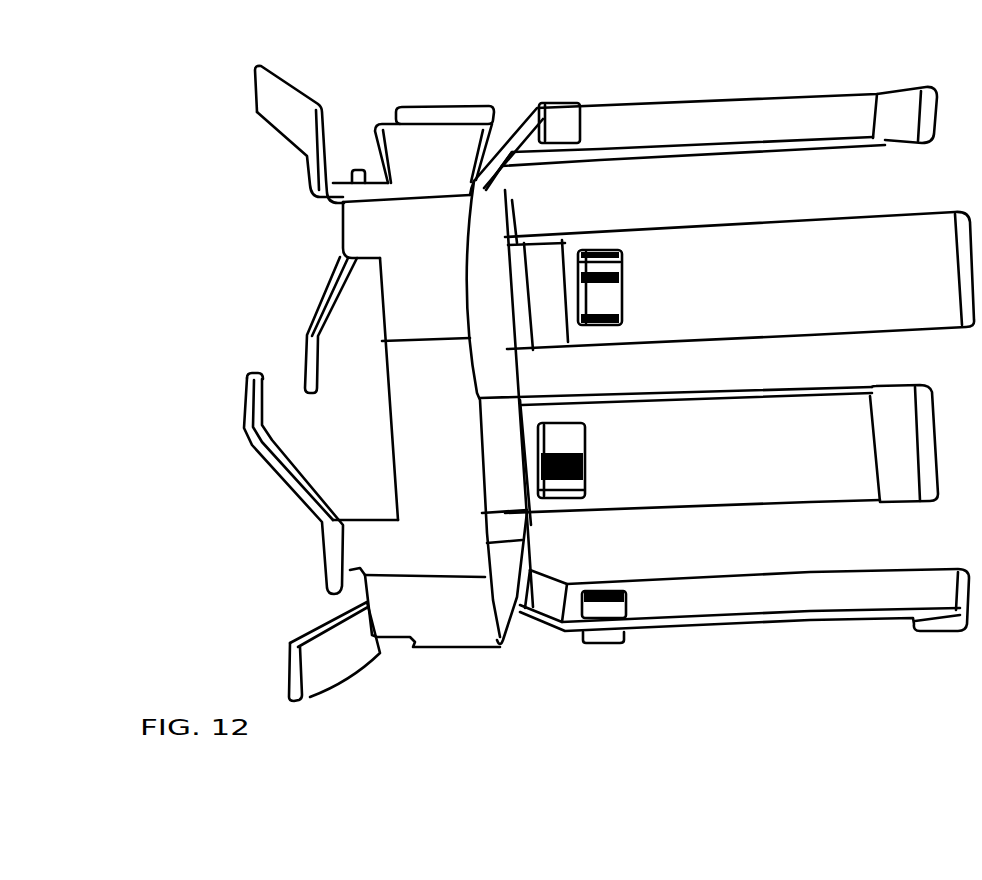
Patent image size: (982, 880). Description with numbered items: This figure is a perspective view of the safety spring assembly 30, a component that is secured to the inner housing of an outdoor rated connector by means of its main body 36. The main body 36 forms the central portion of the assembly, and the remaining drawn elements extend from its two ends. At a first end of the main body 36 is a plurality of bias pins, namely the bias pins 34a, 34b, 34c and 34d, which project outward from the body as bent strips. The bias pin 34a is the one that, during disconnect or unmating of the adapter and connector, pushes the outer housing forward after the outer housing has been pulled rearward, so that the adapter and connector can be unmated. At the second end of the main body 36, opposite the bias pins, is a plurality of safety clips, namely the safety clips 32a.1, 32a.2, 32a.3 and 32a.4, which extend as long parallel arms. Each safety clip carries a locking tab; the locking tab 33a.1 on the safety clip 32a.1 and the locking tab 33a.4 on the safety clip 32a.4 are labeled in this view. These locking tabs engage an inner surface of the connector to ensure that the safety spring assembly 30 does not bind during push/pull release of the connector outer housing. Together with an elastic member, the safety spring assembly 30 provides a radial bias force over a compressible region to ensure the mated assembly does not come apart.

The safety spring assembly 30 is at (165, 59).
The safety clip 32a.1 is at (705, 138).
The safety clip 32a.2 is at (739, 280).
The safety clip 32a.3 is at (709, 449).
The safety clip 32a.4 is at (744, 600).
The locking tab 33a.1 is at (576, 102).
The locking tab 33a.4 is at (625, 653).
The bias pin 34a is at (238, 394).
The bias pin 34b is at (346, 664).
The bias pin 34c is at (292, 306).
The bias pin 34d is at (273, 124).
The main body 36 is at (445, 423).